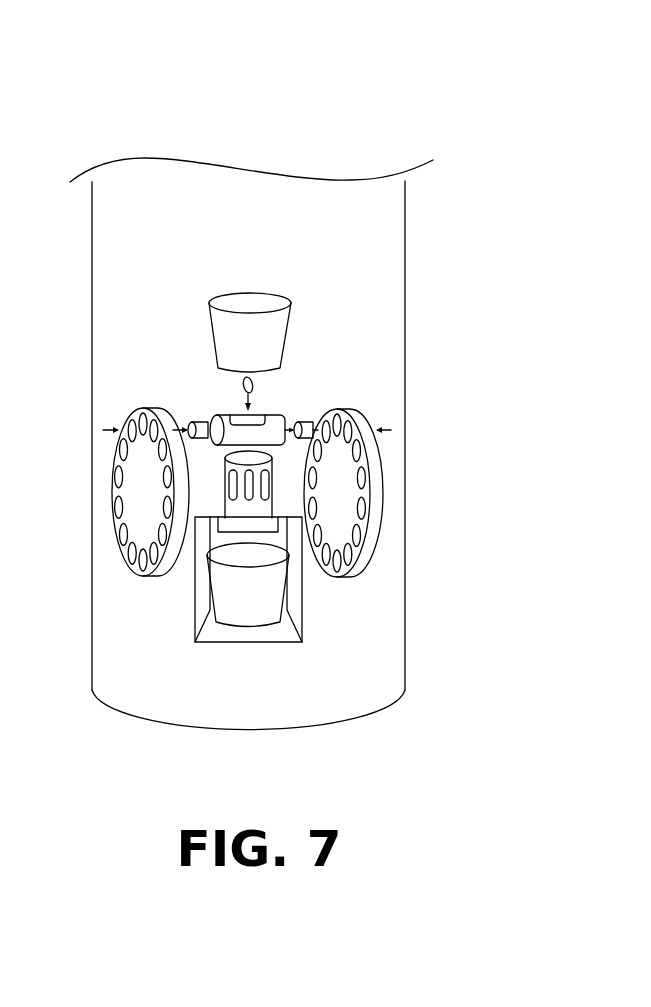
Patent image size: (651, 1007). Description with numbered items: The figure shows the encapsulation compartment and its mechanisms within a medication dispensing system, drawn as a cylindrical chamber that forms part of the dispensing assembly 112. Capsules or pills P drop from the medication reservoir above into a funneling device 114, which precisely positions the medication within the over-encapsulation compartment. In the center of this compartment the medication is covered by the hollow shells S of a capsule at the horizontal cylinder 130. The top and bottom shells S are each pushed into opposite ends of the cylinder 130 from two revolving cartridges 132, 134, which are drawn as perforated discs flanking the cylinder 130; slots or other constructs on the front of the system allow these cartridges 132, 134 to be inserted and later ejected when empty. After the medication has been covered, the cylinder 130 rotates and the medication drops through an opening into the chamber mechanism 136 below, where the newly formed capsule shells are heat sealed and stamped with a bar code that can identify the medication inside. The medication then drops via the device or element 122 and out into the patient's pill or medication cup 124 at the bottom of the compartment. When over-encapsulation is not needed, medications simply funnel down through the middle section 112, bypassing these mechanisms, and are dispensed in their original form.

The dispensing assembly 112 is at (388, 100).
The funneling device 114 is at (287, 328).
The device or element 122 is at (257, 537).
The medication cup 124 is at (245, 603).
The cylinder 130 is at (218, 414).
The revolving cartridge 132 is at (382, 453).
The revolving cartridge 134 is at (173, 567).
The chamber mechanism 136 is at (245, 510).
The hollow shells S is at (194, 420).
The capsules or pills P is at (254, 385).